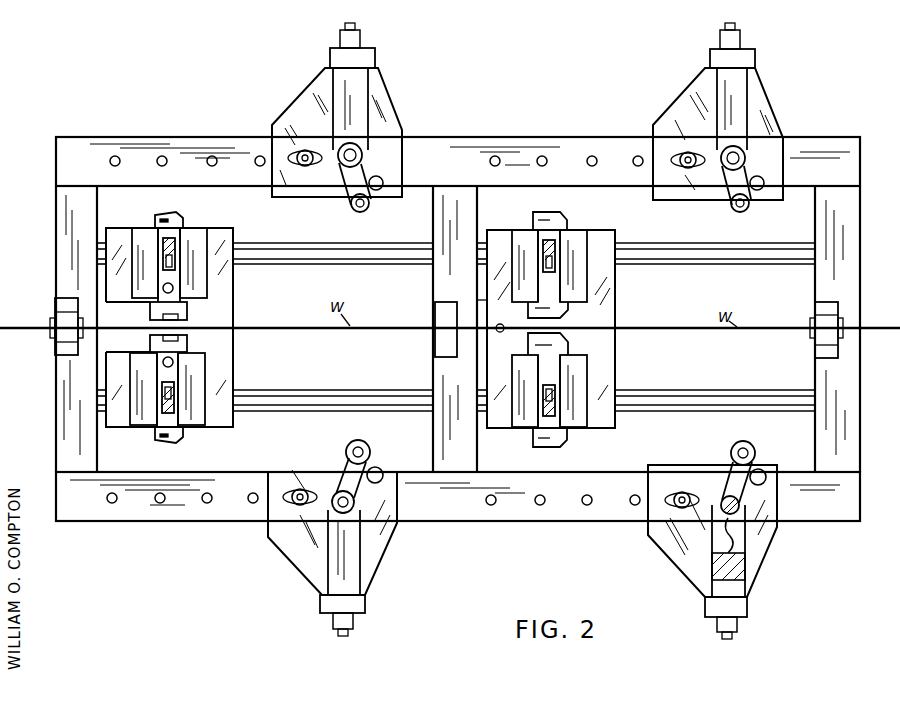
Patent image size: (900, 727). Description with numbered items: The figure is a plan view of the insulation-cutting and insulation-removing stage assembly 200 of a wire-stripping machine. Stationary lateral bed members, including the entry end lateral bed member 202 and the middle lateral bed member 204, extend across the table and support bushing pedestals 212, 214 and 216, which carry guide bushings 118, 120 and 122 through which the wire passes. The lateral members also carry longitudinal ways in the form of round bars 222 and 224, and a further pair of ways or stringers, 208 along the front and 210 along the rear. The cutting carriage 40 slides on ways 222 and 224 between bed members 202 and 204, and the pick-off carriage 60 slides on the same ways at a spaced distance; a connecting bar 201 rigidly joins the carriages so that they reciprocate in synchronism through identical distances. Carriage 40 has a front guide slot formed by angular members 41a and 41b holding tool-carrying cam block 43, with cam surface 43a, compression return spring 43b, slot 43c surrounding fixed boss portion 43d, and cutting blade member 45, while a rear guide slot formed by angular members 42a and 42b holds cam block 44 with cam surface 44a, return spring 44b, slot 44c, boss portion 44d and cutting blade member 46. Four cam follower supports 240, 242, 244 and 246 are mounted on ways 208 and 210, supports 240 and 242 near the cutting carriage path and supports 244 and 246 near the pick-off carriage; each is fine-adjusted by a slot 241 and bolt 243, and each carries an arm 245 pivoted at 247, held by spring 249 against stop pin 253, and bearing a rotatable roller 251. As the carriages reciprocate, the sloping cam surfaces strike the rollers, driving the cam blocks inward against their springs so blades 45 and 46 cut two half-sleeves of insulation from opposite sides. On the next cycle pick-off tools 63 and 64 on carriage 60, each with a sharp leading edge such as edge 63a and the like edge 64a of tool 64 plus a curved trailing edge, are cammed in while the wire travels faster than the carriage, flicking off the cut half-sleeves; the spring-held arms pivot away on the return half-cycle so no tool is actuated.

The work holding fixture frame 200 is at (452, 330).
The entry end lateral bed member 202 is at (57, 454).
The middle lateral bed member 204 is at (436, 432).
The longitudinal way 208 is at (163, 519).
The longitudinal way 210 is at (195, 143).
The bushing pedestal 212 is at (56, 333).
The bushing pedestal 214 is at (440, 336).
The bushing pedestal 216 is at (813, 331).
The round bar 222 is at (330, 243).
The round bar 224 is at (722, 391).
The guide bushing 118 is at (46, 336).
The guide bushing 120 is at (448, 339).
The guide bushing 122 is at (809, 336).
The connecting bar 201 is at (487, 306).
The cutting carriage 40 is at (188, 328).
The angular member 41a is at (132, 430).
The angular member 41b is at (198, 428).
The angular member 42a is at (150, 229).
The angular member 42b is at (210, 233).
The tool-carrying cam block 43 is at (191, 401).
The cam surface 43a is at (182, 441).
The compression return spring 43b is at (176, 402).
The slot 43c is at (172, 390).
The fixed boss portion 43d is at (122, 427).
The tool-carrying cam block 44 is at (190, 246).
The cam surface 44a is at (166, 213).
The compression return spring 44b is at (176, 256).
The slot 44c is at (172, 268).
The fixed boss portion 44d is at (158, 262).
The cutting blade member 45 is at (188, 343).
The cutting blade member 46 is at (190, 312).
The pick-off carriage 60 is at (574, 327).
The pick-off tool 63 is at (594, 398).
The sharp leading edge 63a is at (572, 346).
The pick-off tool 64 is at (594, 257).
The upper jaw 64a is at (572, 312).
The cam follower support 240 is at (305, 566).
The slot 241 is at (650, 471).
The cam follower support 242 is at (303, 108).
The bolt 243 is at (680, 490).
The cam follower support 244 is at (708, 529).
The arm 245 is at (727, 456).
The cam follower support 246 is at (695, 107).
The pivot 247 is at (742, 522).
The spring 249 is at (746, 566).
The cam follower roller 251 is at (756, 450).
The stop pin 253 is at (763, 470).